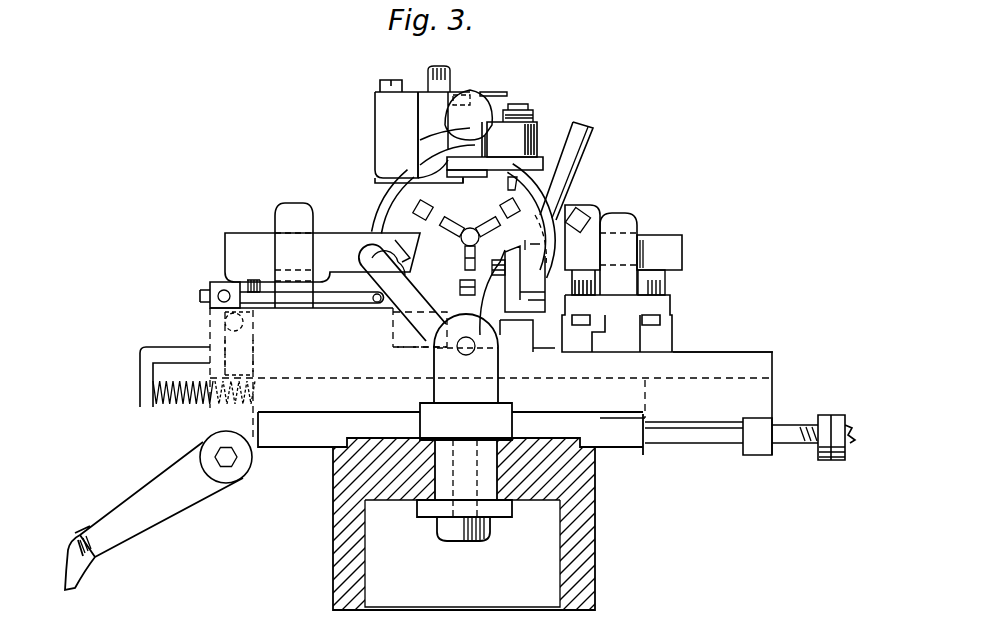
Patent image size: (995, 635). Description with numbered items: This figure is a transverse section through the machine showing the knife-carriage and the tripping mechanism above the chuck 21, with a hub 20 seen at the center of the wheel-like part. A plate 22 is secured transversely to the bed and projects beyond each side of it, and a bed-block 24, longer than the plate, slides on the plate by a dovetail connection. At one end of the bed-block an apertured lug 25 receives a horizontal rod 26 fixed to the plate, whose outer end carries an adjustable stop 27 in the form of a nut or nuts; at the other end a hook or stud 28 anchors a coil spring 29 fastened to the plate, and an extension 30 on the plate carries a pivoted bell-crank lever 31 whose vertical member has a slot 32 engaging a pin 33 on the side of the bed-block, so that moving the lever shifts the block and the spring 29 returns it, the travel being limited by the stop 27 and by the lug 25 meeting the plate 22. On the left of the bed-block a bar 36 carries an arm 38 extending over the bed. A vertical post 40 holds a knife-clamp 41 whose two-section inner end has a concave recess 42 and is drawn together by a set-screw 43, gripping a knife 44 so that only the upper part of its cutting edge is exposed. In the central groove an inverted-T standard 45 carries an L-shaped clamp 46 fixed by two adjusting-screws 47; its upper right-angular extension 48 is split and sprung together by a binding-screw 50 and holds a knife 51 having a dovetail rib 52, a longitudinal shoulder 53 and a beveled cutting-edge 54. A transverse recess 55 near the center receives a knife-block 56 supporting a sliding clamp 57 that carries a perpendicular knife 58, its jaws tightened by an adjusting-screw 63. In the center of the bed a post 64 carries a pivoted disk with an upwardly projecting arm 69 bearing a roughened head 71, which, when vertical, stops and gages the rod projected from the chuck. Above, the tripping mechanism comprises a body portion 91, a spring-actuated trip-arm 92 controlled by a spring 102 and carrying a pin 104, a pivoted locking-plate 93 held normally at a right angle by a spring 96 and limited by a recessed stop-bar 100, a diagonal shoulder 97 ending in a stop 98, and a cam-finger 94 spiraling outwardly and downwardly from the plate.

The hub 20 is at (479, 240).
The chuck 21 is at (446, 232).
The plate 22 is at (460, 511).
The bed-block 24 is at (491, 381).
The apertured lug 25 is at (765, 470).
The horizontal rod 26 is at (694, 432).
The adjustable stop 27 is at (813, 427).
The hook or stud 28 is at (170, 358).
The coil or spiral spring 29 is at (168, 405).
The extension 30 is at (215, 435).
The elbow or bell-crank lever 31 is at (154, 516).
The slot 32 is at (243, 352).
The pin 33 is at (238, 332).
The bar 36 is at (210, 282).
The arm 38 is at (345, 290).
The vertical post 40 is at (294, 255).
The knife-clamp 41 is at (322, 262).
The concave recess 42 is at (408, 230).
The set-screw 43 is at (385, 256).
The knife 44 is at (408, 274).
The inverted-T-shaped standard 45 is at (630, 276).
The L-shaped clamp 46 is at (659, 252).
The adjusting-screws 47 is at (660, 292).
The right-angular extension 48 is at (577, 205).
The binding-screw 50 is at (590, 216).
The knife 51 is at (592, 140).
The dovetail rib 52 is at (582, 163).
The longitudinal shoulder 53 is at (590, 128).
The cutting-edge 54 is at (533, 236).
The transverse recess 55 is at (558, 335).
The knife-block 56 is at (527, 336).
The sliding clamp 57 is at (491, 292).
The perpendicular knife 58 is at (525, 279).
The adjusting-screw 63 is at (491, 270).
The post 64 is at (464, 427).
The arm 69 is at (402, 292).
The head 71 is at (393, 320).
The body portion 91 is at (512, 139).
The spring-actuated trip-arm 92 is at (422, 129).
The pivoted locking-plate 93 is at (495, 146).
The cam-finger 94 is at (531, 221).
The spring 96 is at (533, 108).
The diagonal shoulder 97 is at (478, 177).
The stop 98 is at (509, 190).
The recessed stop-bar 100 is at (472, 145).
The spring 102 is at (503, 82).
The pin or stud 104 is at (430, 183).